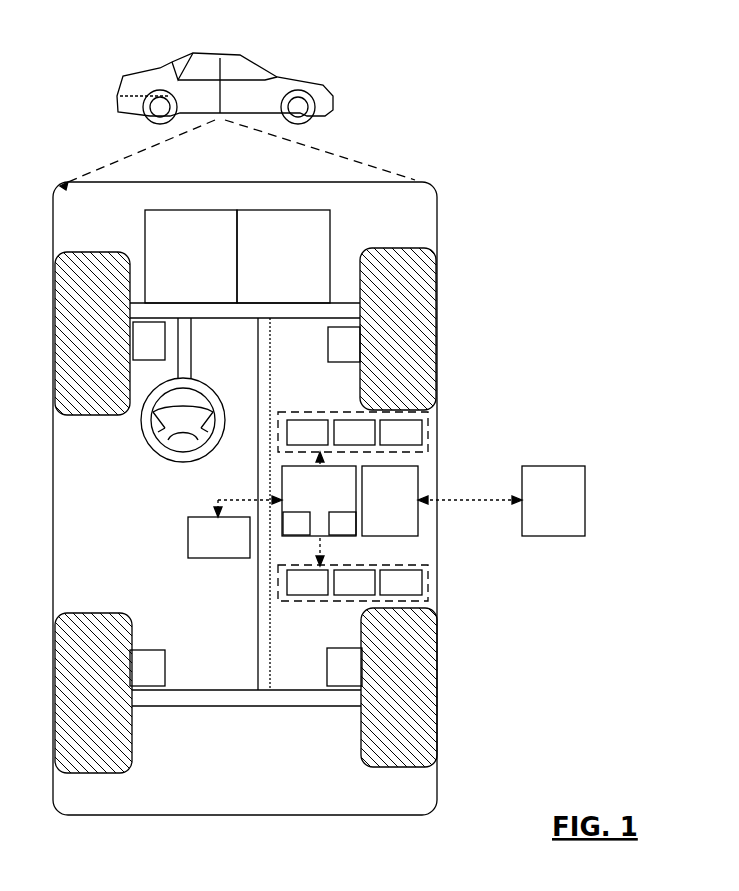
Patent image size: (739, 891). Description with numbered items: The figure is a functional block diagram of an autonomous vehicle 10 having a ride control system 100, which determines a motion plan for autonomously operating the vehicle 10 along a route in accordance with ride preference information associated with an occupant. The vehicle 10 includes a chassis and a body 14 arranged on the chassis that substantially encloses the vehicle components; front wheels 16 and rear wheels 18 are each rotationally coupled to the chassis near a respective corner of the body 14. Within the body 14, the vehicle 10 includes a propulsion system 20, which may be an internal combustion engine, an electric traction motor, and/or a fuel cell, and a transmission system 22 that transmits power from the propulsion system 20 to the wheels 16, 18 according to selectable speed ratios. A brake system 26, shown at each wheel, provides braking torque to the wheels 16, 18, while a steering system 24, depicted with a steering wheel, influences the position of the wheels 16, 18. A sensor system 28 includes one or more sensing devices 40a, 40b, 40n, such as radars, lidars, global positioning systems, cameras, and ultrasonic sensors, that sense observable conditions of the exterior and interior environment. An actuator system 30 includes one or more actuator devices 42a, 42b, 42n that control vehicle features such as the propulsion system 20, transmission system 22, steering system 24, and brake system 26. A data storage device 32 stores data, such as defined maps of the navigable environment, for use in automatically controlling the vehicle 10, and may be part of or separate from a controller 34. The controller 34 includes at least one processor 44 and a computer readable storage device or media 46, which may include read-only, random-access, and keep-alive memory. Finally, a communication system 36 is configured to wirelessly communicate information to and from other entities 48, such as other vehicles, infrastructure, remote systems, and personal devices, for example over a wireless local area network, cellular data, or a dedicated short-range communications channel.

The vehicle 10 is at (118, 100).
The ride control system 100 is at (455, 190).
The body 14 is at (52, 480).
The front wheels 16 is at (92, 252).
The rear wheels 18 is at (104, 773).
The propulsion system 20 is at (191, 256).
The transmission system 22 is at (283, 256).
The steering system 24 is at (208, 338).
The brake system 26 is at (246, 504).
The sensor system 28 is at (353, 414).
The actuator system 30 is at (353, 600).
The data storage device 32 is at (219, 537).
The controller 34 is at (319, 501).
The communication system 36 is at (390, 501).
The sensing device 40a is at (307, 432).
The sensing device 40b is at (354, 432).
The sensing device 40n is at (401, 432).
The actuator device 42a is at (307, 582).
The actuator device 42b is at (354, 582).
The actuator device 42n is at (401, 582).
The processor 44 is at (296, 523).
The computer readable storage device or media 46 is at (342, 523).
The other entities 48 is at (553, 501).